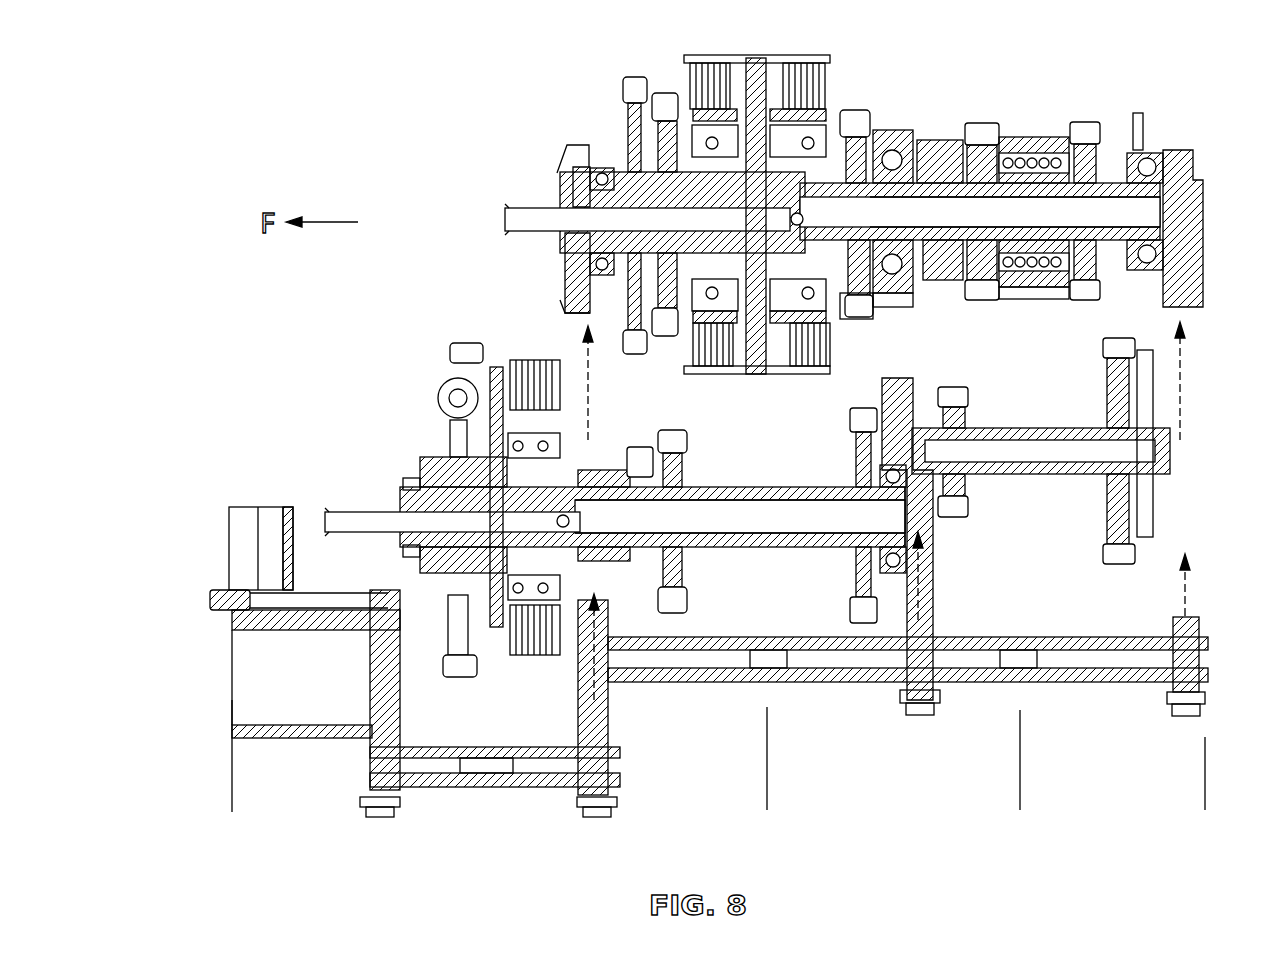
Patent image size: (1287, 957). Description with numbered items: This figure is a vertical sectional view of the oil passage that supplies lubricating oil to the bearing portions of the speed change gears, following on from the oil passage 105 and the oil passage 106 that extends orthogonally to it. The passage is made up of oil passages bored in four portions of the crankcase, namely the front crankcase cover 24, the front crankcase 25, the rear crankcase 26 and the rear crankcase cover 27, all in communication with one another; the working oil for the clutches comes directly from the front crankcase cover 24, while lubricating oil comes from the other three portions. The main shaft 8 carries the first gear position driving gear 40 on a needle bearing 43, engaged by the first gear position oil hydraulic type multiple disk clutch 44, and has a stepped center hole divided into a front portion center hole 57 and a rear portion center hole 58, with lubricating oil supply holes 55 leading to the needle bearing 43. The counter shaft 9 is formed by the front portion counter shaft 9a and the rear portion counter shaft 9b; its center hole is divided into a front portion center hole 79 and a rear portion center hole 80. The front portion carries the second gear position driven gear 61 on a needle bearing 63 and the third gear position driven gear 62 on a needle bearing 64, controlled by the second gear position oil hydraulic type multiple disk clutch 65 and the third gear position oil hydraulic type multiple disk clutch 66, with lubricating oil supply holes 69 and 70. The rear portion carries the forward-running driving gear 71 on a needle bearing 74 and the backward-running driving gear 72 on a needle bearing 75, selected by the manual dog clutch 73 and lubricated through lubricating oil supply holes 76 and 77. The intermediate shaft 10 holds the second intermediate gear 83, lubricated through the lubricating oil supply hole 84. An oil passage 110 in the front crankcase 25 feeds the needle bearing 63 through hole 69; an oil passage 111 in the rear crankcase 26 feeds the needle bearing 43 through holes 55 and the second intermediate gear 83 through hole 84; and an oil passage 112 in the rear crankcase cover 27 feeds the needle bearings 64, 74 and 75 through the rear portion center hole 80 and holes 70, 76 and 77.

The main shaft 8 is at (775, 500).
The counter shaft 9 is at (945, 303).
The front portion counter shaft 9a is at (860, 312).
The rear portion counter shaft 9b is at (882, 294).
The intermediate shaft 10 is at (1043, 435).
The front crankcase cover 24 is at (232, 818).
The front crankcase 25 is at (500, 818).
The rear crankcase 26 is at (770, 818).
The rear crankcase cover 27 is at (1020, 818).
The first gear position driving gear 40 is at (657, 437).
The needle bearing 43 is at (600, 475).
The first gear position oil hydraulic type multiple disk clutch 44 is at (536, 352).
The lubricating oil supply holes 55 is at (591, 535).
The front portion center hole 57 is at (480, 520).
The rear portion center hole 58 is at (812, 512).
The second gear position driven gear 61 is at (664, 156).
The third gear position driven gear 62 is at (855, 120).
The needle bearing 63 is at (632, 136).
The needle bearing 64 is at (890, 135).
The second gear position oil hydraulic type multiple disk clutch 65 is at (684, 81).
The third gear position oil hydraulic type multiple disk clutch 66 is at (828, 86).
The lubricating oil supply hole 69 is at (594, 173).
The lubricating oil supply hole 70 is at (832, 212).
The forward-running driving gear 71 is at (929, 140).
The backward-running driving gear 72 is at (1114, 130).
The manual dog clutch 73 is at (1025, 138).
The needle bearing 74 is at (968, 135).
The needle bearing 75 is at (1148, 144).
The lubricating oil supply hole 76 is at (960, 183).
The lubricating oil supply hole 77 is at (1098, 180).
The front portion center hole 79 is at (741, 376).
The rear portion center hole 80 is at (1039, 210).
The second intermediate gear 83 is at (950, 399).
The lubricating oil supply hole 84 is at (1118, 453).
The oil passage 105 is at (268, 537).
The oil passage 106 is at (292, 598).
The oil passage 110 is at (582, 277).
The oil passage 111 is at (925, 600).
The oil passage 112 is at (1195, 263).